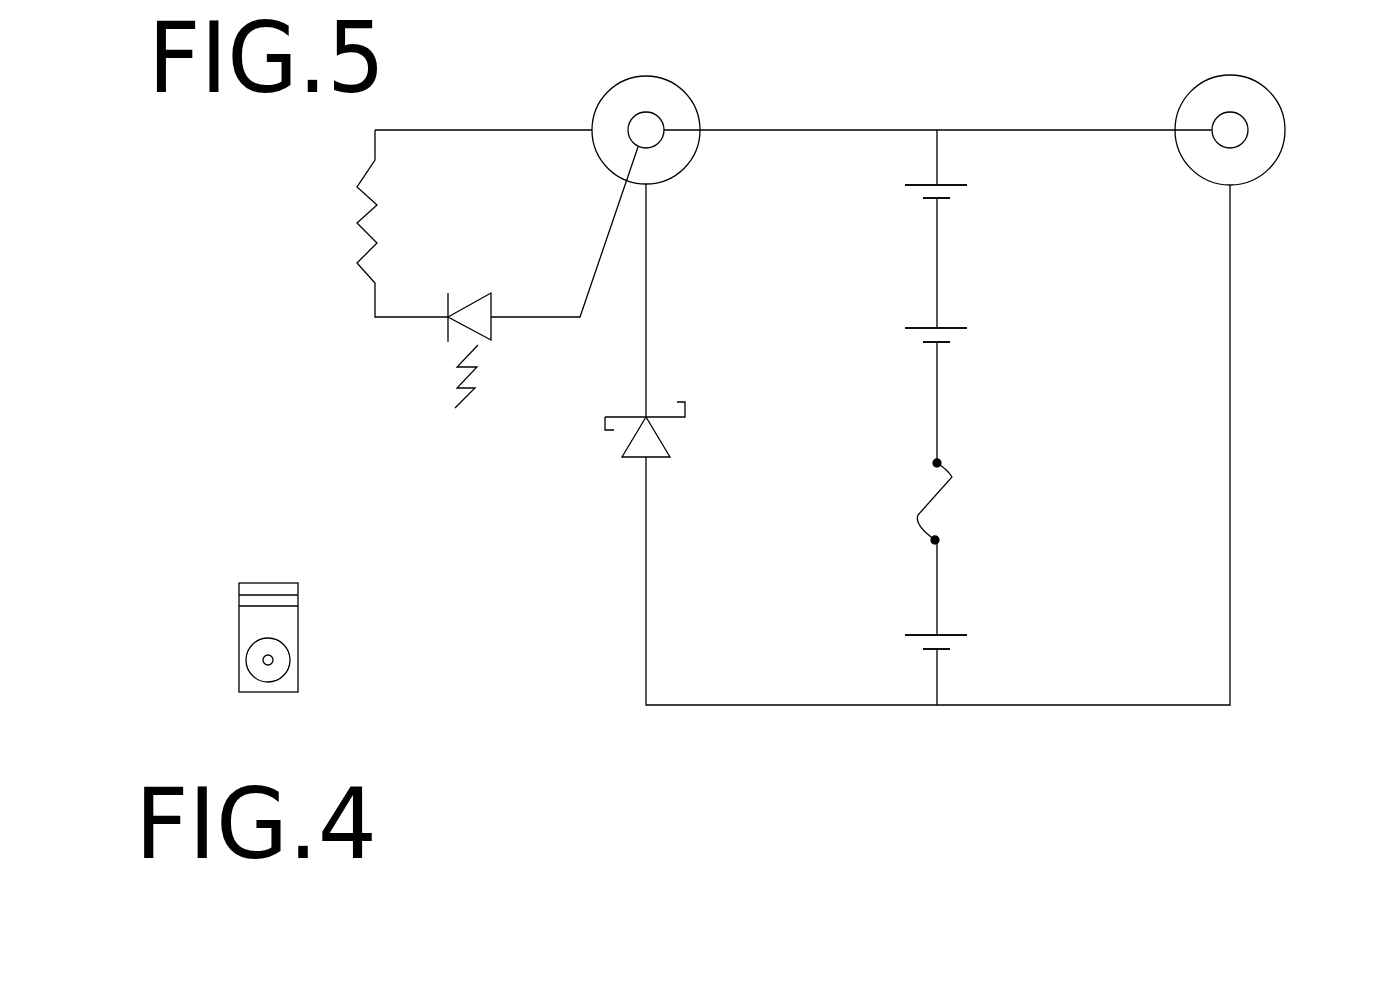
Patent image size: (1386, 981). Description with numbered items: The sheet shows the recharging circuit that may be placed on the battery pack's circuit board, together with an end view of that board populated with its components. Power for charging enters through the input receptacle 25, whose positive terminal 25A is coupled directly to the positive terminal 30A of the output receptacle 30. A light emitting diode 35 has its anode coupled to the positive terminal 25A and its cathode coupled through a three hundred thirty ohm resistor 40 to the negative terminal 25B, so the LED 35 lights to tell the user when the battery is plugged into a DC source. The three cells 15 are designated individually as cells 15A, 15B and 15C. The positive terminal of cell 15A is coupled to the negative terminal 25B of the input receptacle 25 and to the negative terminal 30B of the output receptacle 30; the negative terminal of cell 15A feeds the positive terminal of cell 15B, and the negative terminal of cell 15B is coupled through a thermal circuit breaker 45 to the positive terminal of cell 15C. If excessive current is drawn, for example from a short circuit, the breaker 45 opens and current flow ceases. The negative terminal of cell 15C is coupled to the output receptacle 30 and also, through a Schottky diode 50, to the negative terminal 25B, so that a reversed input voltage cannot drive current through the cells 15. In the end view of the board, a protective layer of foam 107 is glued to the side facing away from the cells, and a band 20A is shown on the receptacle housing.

In FIG. 5, the cells 15 is at (967, 185).
In FIG. 5, the cell 15A is at (923, 198).
In FIG. 5, the cell 15B is at (923, 342).
In FIG. 5, the cell 15C is at (923, 649).
In FIG. 4, the plug housing band 20A is at (298, 606).
In FIG. 5, the input receptacle 25 is at (651, 126).
In FIG. 5, the positive terminal 25A is at (650, 112).
In FIG. 4, the positive terminal 25A is at (298, 673).
In FIG. 5, the negative terminal 25B is at (677, 175).
In FIG. 5, the output receptacle 30 is at (1233, 126).
In FIG. 5, the positive terminal 30A is at (1233, 113).
In FIG. 5, the negative terminal 30B is at (1262, 175).
In FIG. 5, the light emitting diode 35 is at (492, 303).
In FIG. 5, the resistor 40 is at (380, 225).
In FIG. 5, the thermal circuit breaker 45 is at (952, 477).
In FIG. 5, the Schottky diode 50 is at (668, 453).
In FIG. 4, the foam 107 is at (238, 583).